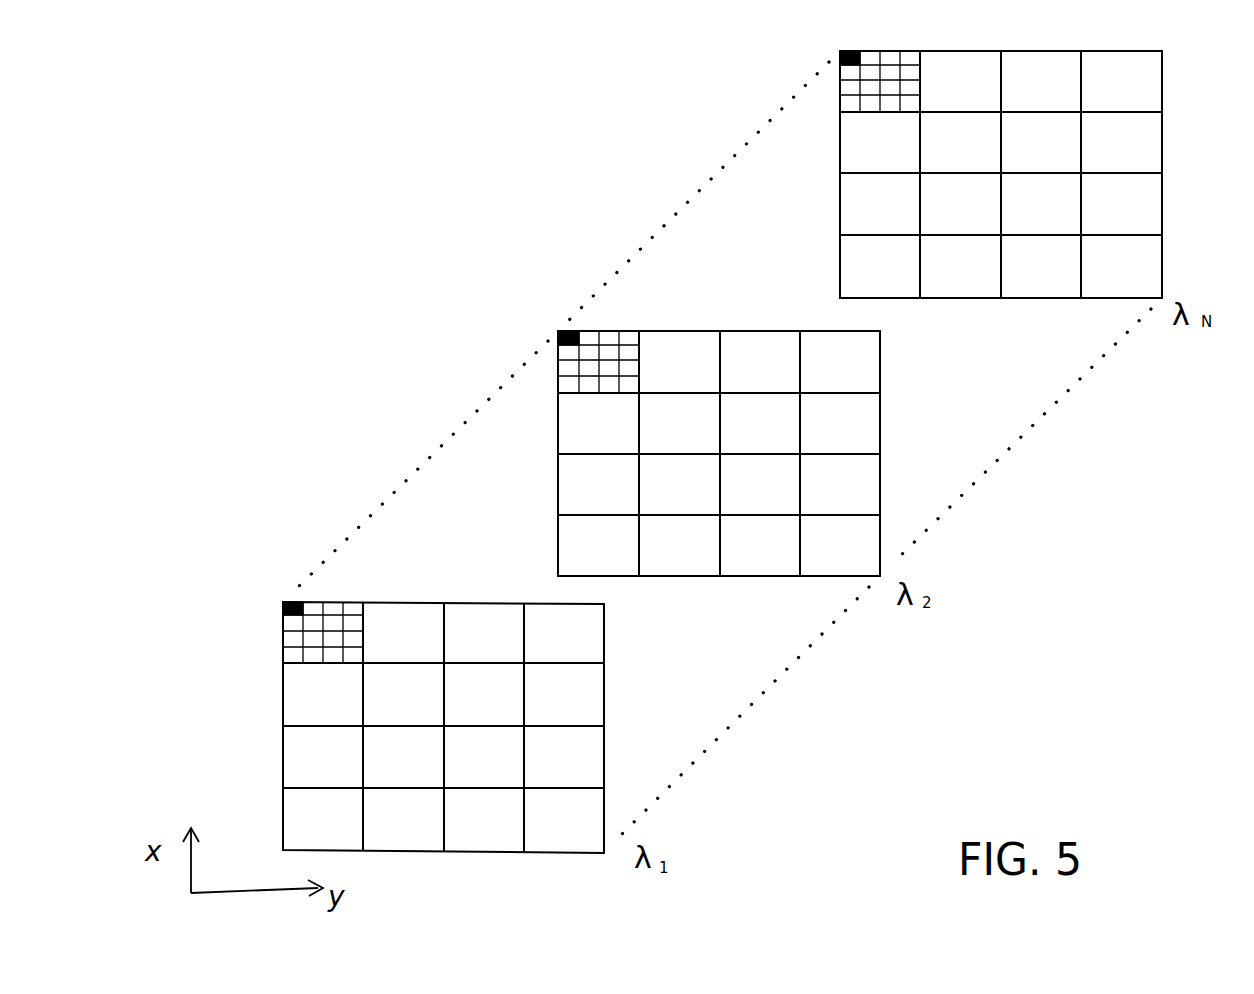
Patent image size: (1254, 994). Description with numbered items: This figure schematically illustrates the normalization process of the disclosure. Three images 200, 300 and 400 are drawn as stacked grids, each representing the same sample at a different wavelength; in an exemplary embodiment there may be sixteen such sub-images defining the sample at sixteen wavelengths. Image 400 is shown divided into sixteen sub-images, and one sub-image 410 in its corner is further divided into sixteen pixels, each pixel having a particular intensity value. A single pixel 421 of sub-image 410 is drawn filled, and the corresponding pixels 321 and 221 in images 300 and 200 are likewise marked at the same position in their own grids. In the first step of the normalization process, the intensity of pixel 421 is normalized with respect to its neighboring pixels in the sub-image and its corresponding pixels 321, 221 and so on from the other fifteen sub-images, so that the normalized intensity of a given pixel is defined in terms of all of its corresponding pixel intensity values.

The image 200 is at (955, 166).
The pixel 221 is at (840, 52).
The image 300 is at (742, 389).
The pixel 321 is at (561, 330).
The image 400 is at (467, 665).
The sub-image 410 is at (353, 588).
The pixel 421 is at (283, 602).